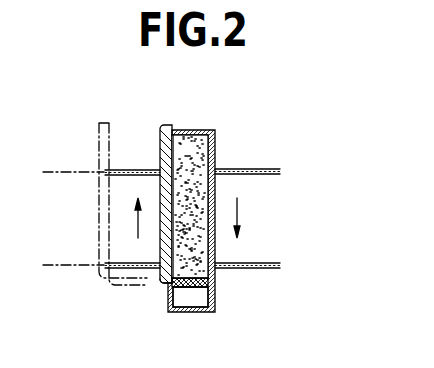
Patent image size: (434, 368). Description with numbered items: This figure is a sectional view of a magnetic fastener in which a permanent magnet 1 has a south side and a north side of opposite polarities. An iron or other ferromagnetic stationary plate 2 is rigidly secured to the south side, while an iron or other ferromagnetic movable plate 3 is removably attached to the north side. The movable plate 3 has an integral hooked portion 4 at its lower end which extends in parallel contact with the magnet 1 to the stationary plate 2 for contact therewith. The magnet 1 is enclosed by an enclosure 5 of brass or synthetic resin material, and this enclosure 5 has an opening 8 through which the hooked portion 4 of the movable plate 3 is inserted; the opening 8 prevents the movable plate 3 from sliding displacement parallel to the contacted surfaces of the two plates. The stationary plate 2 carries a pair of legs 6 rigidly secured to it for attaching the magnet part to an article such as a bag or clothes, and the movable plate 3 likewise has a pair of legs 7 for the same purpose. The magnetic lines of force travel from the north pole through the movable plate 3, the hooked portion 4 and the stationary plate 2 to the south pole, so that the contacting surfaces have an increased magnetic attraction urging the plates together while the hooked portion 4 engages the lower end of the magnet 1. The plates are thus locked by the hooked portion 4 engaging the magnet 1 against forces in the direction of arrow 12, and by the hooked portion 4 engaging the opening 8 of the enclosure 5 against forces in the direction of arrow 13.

The permanent magnet 1 is at (192, 143).
The stationary plate 2 is at (213, 150).
The movable plate 3 is at (165, 126).
The hooked portion 4 is at (190, 288).
The enclosure 5 is at (215, 292).
The legs 6 is at (263, 268).
The legs 7 is at (133, 169).
The opening 8 is at (170, 290).
The arrow 12 is at (138, 218).
The arrow 13 is at (238, 211).